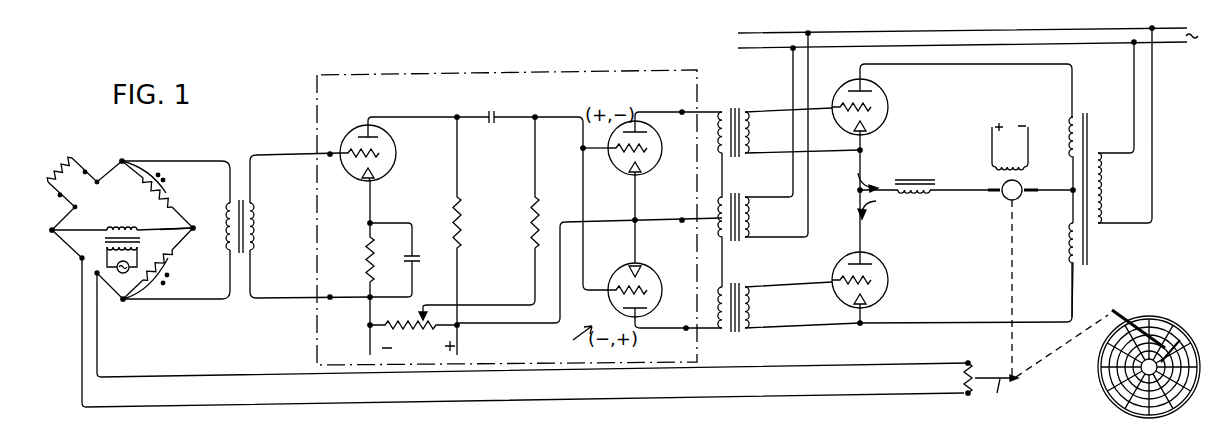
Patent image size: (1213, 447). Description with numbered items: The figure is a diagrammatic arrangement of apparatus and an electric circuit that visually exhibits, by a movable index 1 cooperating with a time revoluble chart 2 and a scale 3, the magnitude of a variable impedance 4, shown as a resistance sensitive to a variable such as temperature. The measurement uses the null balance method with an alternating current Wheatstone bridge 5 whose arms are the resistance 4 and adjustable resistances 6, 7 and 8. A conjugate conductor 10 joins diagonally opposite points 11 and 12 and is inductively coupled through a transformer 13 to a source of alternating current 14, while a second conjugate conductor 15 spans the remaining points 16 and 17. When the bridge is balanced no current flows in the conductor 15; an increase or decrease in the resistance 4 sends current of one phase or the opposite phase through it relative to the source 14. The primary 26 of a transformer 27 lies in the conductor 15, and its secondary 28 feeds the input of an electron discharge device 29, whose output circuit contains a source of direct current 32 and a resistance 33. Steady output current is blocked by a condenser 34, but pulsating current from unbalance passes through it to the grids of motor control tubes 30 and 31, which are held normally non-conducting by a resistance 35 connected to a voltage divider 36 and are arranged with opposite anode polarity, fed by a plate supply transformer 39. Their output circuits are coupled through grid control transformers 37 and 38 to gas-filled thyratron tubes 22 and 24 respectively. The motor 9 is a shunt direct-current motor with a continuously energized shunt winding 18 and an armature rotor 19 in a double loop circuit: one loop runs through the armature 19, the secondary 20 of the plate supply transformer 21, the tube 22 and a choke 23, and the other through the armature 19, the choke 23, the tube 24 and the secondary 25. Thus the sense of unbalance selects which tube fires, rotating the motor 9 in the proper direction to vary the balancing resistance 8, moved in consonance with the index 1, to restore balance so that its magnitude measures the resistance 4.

The movable index 1 is at (1118, 313).
The time revoluble chart 2 is at (1112, 402).
The scale 3 is at (1175, 336).
The variable impedance 4 is at (84, 185).
The Wheatstone bridge 5 is at (128, 209).
The adjustable resistance 6 is at (173, 195).
The adjustable resistance 7 is at (174, 255).
The balancing resistance 8 is at (981, 378).
The motor 9 is at (1003, 228).
The conjugate conductor 10 is at (166, 224).
The bridge point 11 is at (52, 235).
The bridge point 12 is at (193, 233).
The transformer 13 is at (111, 250).
The source of alternating current 14 is at (97, 275).
The second conjugate conductor 15 is at (194, 159).
The bridge point 16 is at (122, 160).
The bridge point 17 is at (126, 302).
The shunt winding 18 is at (1010, 146).
The armature rotor 19 is at (1019, 199).
The secondary 20 is at (1057, 170).
The transformer 21 is at (1132, 201).
The electron discharge device 22 is at (887, 94).
The choke 23 is at (923, 189).
The electron discharge device 24 is at (887, 297).
The secondary 25 is at (1059, 270).
The primary 26 is at (226, 216).
The transformer 27 is at (280, 225).
The secondary 28 is at (262, 272).
The electron discharge device 29 is at (397, 166).
The motor control tube 30 is at (649, 172).
The motor control tube 31 is at (650, 268).
The source of direct current 32 is at (413, 343).
The resistance 33 is at (442, 220).
The condenser 34 is at (532, 190).
The resistance 35 is at (521, 181).
The voltage divider 36 is at (418, 316).
The transformer 37 is at (789, 122).
The transformer 38 is at (895, 297).
The transformer 39 is at (633, 177).